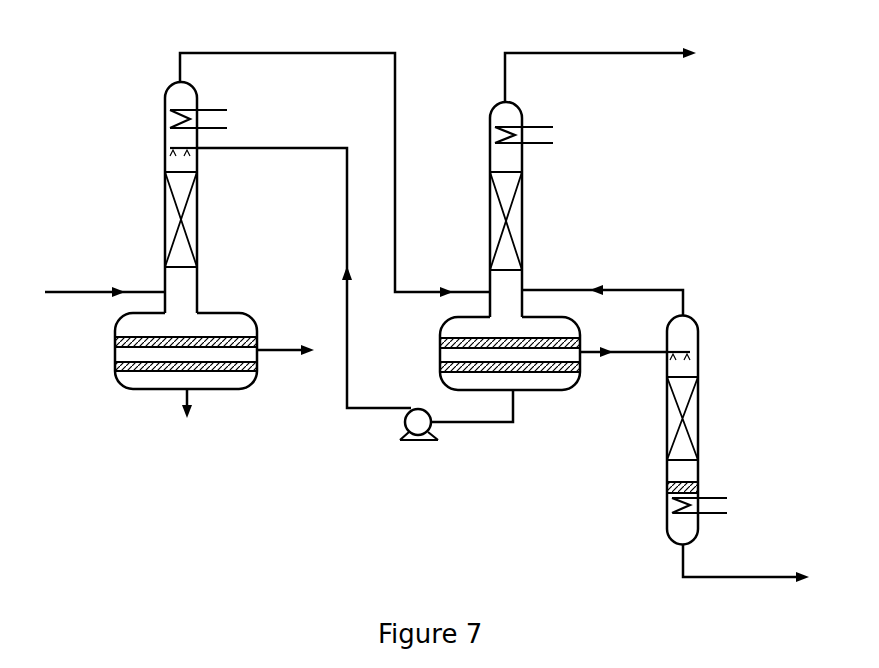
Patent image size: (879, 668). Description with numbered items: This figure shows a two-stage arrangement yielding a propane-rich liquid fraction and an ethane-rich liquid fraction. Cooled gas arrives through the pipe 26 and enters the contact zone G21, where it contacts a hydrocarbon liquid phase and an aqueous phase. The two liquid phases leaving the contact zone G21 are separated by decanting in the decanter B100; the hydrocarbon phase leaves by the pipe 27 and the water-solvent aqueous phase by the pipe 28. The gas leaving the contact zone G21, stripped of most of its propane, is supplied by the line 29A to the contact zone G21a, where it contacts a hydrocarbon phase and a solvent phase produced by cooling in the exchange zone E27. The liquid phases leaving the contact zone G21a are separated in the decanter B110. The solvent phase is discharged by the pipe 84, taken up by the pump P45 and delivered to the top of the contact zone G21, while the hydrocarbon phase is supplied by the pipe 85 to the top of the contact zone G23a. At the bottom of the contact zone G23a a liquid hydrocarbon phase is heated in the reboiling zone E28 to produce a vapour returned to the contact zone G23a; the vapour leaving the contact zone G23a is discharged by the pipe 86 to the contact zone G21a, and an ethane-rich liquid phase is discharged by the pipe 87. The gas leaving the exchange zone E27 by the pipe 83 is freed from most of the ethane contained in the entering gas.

The pipe 26 is at (84, 290).
The pipe 27 is at (283, 352).
The pipe 28 is at (191, 395).
The line 29A is at (272, 52).
The contact zone G21 is at (197, 232).
The decanter B100 is at (286, 321).
The pump P45 is at (418, 440).
The pipe 84 is at (505, 412).
The contact zone G21a is at (522, 211).
The exchange zone E27 is at (497, 130).
The pipe 83 is at (584, 51).
The decanter B110 is at (440, 366).
The pipe 85 is at (620, 355).
The pipe 86 is at (637, 289).
The contact zone G23a is at (698, 443).
The reboiling zone E28 is at (668, 510).
The pipe 87 is at (745, 579).